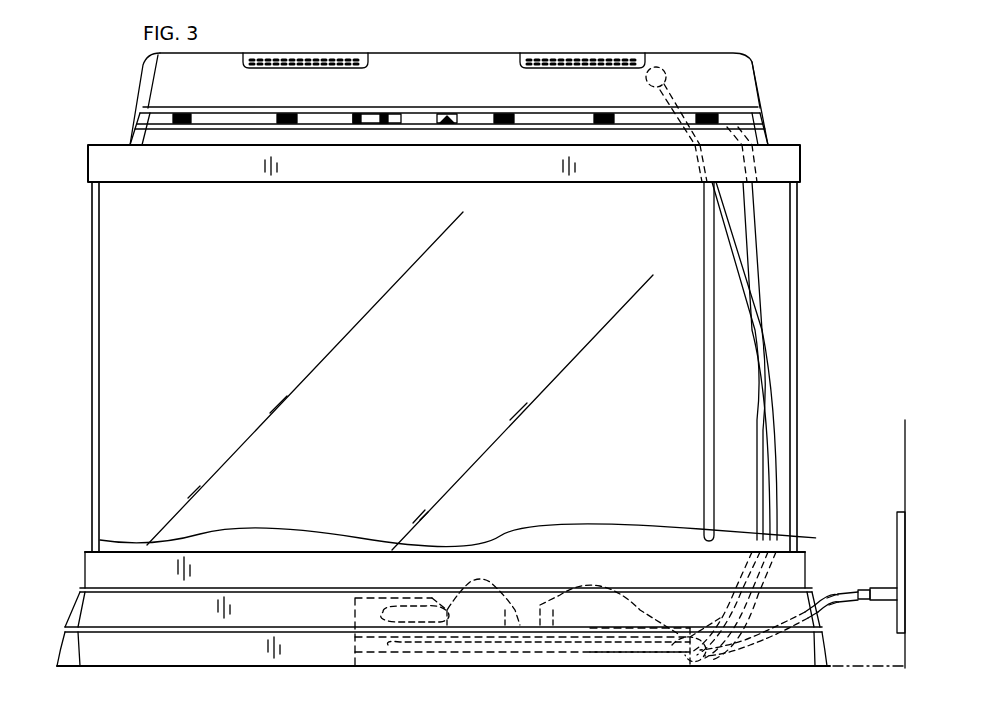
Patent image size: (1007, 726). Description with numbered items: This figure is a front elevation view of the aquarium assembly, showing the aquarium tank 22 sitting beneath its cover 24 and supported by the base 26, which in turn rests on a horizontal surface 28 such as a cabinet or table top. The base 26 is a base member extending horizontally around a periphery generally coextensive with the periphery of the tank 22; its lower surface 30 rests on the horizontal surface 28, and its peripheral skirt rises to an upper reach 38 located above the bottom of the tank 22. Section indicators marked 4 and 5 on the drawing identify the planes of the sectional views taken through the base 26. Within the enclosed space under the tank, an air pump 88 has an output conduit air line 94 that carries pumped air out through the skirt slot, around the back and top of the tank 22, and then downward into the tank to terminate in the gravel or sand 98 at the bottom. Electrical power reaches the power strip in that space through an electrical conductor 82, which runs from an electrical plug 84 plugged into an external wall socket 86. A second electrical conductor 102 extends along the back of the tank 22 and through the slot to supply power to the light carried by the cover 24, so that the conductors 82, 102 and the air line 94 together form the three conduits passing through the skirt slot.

The aquarium tank 22 is at (92, 370).
The cover 24 is at (150, 78).
The base 26 is at (80, 595).
The horizontal surface 28 is at (68, 640).
The lower surface 30 is at (113, 668).
The upper reach 38 is at (90, 550).
The electrical conductor 82 is at (848, 604).
The electrical plug 84 is at (882, 589).
The external wall socket 86 is at (897, 524).
The air pump 88 is at (372, 672).
The air line 94 is at (494, 670).
The gravel or sand 98 is at (662, 530).
The electrical conductor 102 is at (738, 243).
The section line 4- 4 is at (85, 690).
The section line 5- 5 is at (688, 15).